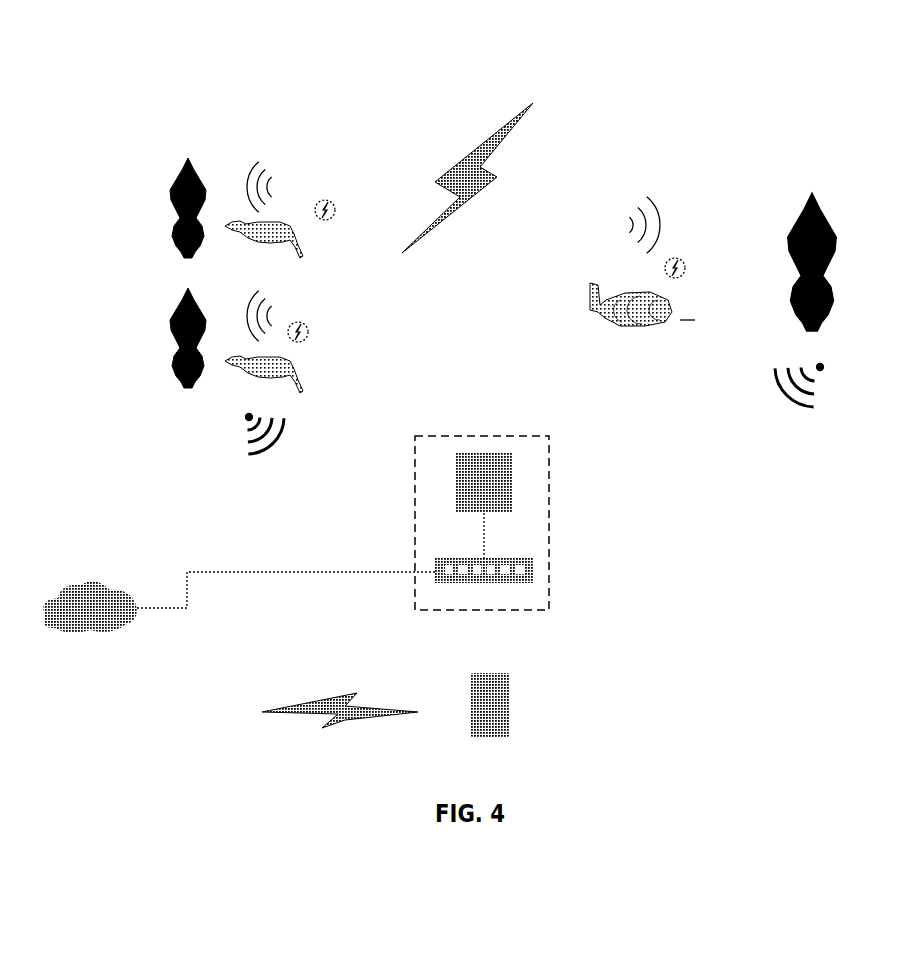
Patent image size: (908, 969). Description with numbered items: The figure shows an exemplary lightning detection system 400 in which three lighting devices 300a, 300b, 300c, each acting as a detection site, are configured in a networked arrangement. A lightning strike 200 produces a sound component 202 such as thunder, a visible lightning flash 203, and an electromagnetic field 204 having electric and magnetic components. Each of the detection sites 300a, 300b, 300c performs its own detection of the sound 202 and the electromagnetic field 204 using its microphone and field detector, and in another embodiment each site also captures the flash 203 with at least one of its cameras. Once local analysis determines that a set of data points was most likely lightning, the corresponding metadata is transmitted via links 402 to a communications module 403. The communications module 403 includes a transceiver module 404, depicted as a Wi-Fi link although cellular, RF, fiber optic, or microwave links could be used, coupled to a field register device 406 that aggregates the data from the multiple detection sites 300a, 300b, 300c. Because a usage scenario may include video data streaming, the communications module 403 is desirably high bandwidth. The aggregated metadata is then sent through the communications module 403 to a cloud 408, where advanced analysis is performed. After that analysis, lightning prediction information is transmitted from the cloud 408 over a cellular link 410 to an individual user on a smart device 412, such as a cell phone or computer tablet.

The lightning detection system 400 is at (470, 33).
The lighting device 300a is at (163, 208).
The lighting device 300b is at (163, 338).
The lighting device 300c is at (829, 262).
The sound component 202 is at (277, 187).
The visible lightning flash 203 is at (341, 210).
The electromagnetic field 204 is at (264, 241).
The lightning strike 200 is at (467, 178).
The links 402 is at (285, 448).
The communications module 403 is at (553, 503).
The transceiver module 404 is at (484, 482).
The field register device 406 is at (533, 563).
The cloud 408 is at (239, 602).
The cellular link 410 is at (340, 702).
The smart device 412 is at (490, 705).